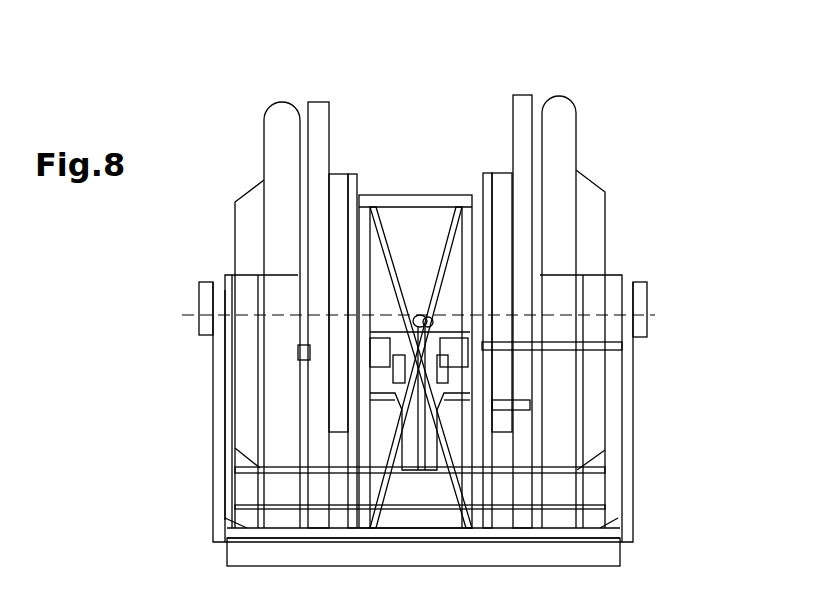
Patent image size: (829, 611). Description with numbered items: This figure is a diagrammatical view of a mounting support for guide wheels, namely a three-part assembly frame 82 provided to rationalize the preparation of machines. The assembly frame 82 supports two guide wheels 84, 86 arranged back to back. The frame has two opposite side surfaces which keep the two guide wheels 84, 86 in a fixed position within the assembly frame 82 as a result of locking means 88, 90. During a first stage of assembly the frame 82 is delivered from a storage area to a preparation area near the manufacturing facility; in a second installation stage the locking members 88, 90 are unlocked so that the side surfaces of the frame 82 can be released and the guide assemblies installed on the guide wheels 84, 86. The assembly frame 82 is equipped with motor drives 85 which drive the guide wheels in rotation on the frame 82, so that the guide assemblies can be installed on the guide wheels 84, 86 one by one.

The assembly frame 82 is at (700, 390).
The guide wheel 84 is at (322, 138).
The motor drive 85 is at (203, 298).
The guide wheel 86 is at (522, 127).
The locking means 88 is at (220, 357).
The locking means 90 is at (627, 345).